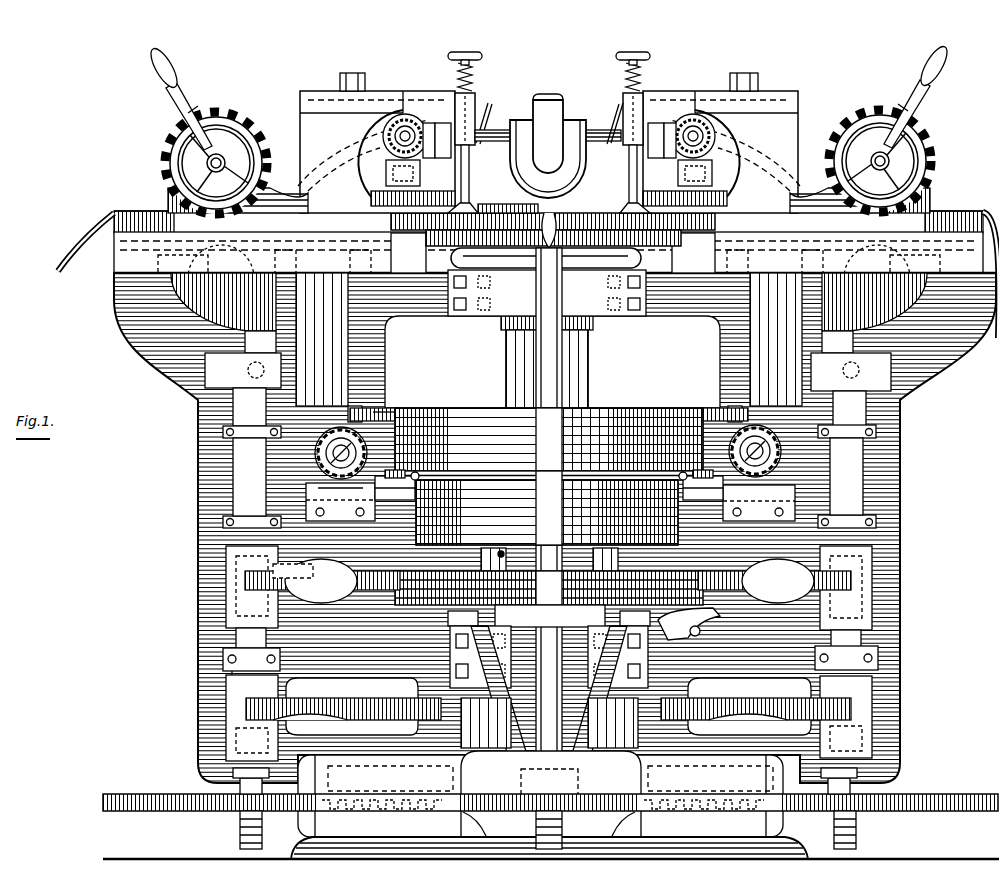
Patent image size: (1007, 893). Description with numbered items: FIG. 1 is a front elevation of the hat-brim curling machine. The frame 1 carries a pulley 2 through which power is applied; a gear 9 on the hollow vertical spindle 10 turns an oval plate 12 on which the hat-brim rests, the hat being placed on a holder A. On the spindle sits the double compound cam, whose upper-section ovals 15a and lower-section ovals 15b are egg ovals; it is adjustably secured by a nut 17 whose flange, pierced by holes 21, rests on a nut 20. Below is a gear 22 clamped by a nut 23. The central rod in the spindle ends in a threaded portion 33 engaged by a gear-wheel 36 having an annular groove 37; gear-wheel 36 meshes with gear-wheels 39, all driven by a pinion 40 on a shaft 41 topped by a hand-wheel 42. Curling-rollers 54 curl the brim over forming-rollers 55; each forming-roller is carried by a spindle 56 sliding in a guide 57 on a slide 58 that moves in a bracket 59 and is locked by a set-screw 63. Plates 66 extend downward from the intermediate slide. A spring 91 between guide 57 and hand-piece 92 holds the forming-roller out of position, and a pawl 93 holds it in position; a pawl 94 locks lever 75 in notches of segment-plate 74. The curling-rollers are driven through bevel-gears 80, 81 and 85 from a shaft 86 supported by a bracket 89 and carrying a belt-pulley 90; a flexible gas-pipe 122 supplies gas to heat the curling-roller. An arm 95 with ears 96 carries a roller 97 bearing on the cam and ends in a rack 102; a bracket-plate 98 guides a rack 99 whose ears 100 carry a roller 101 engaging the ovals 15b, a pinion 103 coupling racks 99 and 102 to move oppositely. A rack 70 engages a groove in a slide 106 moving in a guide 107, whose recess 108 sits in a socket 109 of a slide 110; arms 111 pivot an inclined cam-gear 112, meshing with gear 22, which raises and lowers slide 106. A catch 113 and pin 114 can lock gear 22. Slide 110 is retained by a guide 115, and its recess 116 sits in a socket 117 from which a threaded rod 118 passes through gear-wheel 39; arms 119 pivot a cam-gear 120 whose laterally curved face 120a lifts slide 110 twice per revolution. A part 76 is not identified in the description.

The frame 1 is at (200, 504).
The pulley 2 is at (540, 708).
The gear 9 is at (648, 232).
The hollow vertical spindle 10 is at (580, 362).
The oval plate 12 is at (553, 274).
The ovals of the upper section 15a is at (640, 400).
The ovals of the lower section 15b is at (668, 526).
The nut 17 is at (473, 548).
The nut 20 is at (610, 563).
The holes 21 is at (493, 543).
The gear 22 is at (640, 572).
The nut 23 is at (487, 610).
The threaded portion 33 is at (554, 836).
The gear-wheel 36 is at (540, 794).
The annular groove 37 is at (232, 780).
The gear-wheels 39 is at (160, 788).
The pinion 40 is at (557, 801).
The shaft 41 is at (549, 520).
The hand-wheel 42 is at (553, 240).
The curling-rollers 54 is at (425, 188).
The forming-rollers 55 is at (470, 198).
The spindle 56 is at (462, 162).
The guide 57 is at (450, 95).
The slide 58 is at (413, 88).
The bracket 59 is at (549, 157).
The set-screw 63 is at (350, 66).
The downwardly-extending plates 66 is at (549, 302).
The rack 70 is at (549, 342).
The segment-plate 74 is at (165, 160).
The lever 75 is at (182, 104).
The hand wheel 76 is at (548, 162).
The bevel-gear 80 is at (375, 128).
The bevel-gear 81 is at (693, 139).
The bevel-gear 85 is at (430, 115).
The shaft 86 is at (605, 120).
The bracket 89 is at (565, 110).
The belt-pulley 90 is at (548, 146).
The spring 91 is at (618, 66).
The hand-piece 92 is at (474, 48).
The spring-actuated pawl 93 is at (484, 96).
The spring-actuated pawl 94 is at (165, 85).
The arm 95 is at (549, 339).
The ears 96 is at (548, 425).
The roller 97 is at (366, 397).
The bracket-plate 98 is at (550, 502).
The rack 99 is at (541, 493).
The ears 100 is at (408, 466).
The roller 101 is at (395, 494).
The rack 102 is at (342, 405).
The pinion 103 is at (378, 420).
The slide 106 is at (548, 389).
The guide 107 is at (218, 476).
The recess 108 is at (235, 585).
The socket 109 is at (228, 628).
The slide 110 is at (215, 648).
The inwardly-extending arms 111 is at (345, 556).
The cam-gear 112 is at (360, 570).
The catch 113 is at (678, 628).
The pin 114 is at (650, 612).
The guide 115 is at (230, 668).
The recess 116 is at (840, 710).
The socket 117 is at (232, 735).
The threaded rod 118 is at (232, 818).
The inwardly-extending arms 119 is at (305, 690).
The cam-gear 120 is at (238, 702).
The lateral curvature 120a is at (280, 690).
The flexible gas-pipe 122 is at (120, 205).
The hat holder A is at (583, 200).